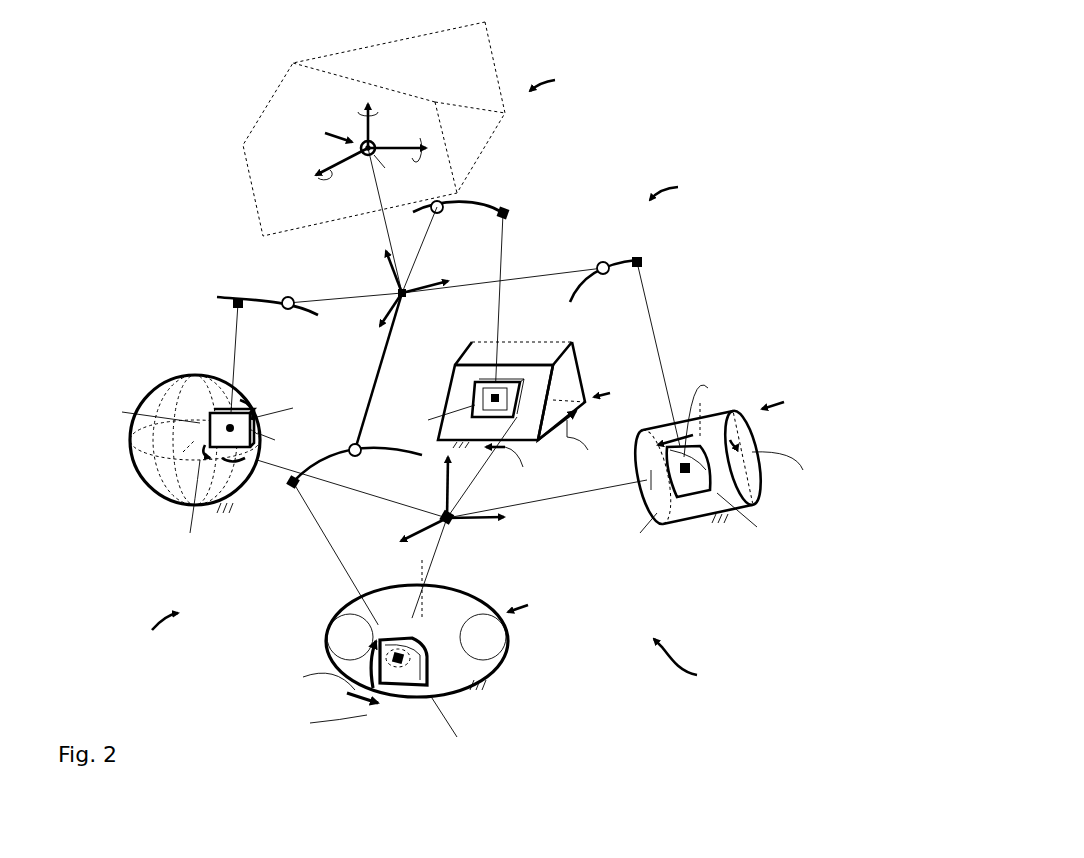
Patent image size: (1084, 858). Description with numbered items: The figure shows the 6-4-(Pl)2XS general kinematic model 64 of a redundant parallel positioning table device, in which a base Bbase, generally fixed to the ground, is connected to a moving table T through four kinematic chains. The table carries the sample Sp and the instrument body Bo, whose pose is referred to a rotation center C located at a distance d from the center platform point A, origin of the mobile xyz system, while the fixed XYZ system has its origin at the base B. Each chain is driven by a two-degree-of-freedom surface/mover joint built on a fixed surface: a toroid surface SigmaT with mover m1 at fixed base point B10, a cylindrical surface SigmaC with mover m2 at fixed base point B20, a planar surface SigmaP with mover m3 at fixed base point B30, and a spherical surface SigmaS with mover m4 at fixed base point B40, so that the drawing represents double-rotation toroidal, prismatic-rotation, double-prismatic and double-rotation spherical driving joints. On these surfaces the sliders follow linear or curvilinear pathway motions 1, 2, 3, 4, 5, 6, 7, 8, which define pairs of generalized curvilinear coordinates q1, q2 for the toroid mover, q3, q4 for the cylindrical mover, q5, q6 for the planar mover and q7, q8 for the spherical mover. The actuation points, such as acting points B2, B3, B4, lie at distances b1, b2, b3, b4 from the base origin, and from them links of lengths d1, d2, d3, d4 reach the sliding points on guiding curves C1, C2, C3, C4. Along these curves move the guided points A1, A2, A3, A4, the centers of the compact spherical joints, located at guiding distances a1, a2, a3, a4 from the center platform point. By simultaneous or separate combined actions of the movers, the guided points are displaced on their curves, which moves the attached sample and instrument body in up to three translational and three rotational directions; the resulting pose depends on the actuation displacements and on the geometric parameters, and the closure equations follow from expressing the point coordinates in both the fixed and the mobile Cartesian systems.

The slider pathway motion 1 is at (396, 692).
The slider pathway motion 2 is at (433, 673).
The slider pathway motion 3 is at (693, 507).
The slider pathway motion 4 is at (643, 490).
The slider pathway motion 5 is at (502, 380).
The slider pathway motion 6 is at (530, 383).
The slider pathway motion 7 is at (252, 405).
The slider pathway motion 8 is at (240, 467).
The sample Sp is at (374, 129).
The rotation center C is at (379, 143).
The body Bo is at (555, 79).
The table T is at (674, 187).
The distance d is at (381, 243).
The center platform point A is at (406, 308).
The guided point A1 is at (358, 457).
The guided point A2 is at (603, 272).
The guided point A3 is at (458, 199).
The guided point A4 is at (285, 298).
The guiding curve C1 is at (412, 446).
The guiding curve C2 is at (639, 257).
The guiding curve C3 is at (509, 214).
The guiding curve C4 is at (211, 288).
The guiding point distance a1 is at (378, 371).
The guiding point distance a2 is at (470, 290).
The guiding point distance a3 is at (419, 250).
The guiding point distance a4 is at (340, 301).
The distance d1 is at (323, 540).
The distance d2 is at (651, 322).
The distance d3 is at (498, 262).
The distance d4 is at (236, 350).
The actuation point distance b1 is at (441, 560).
The actuation point distance b2 is at (568, 490).
The actuation point distance b3 is at (495, 475).
The actuation point distance b4 is at (360, 497).
The base B is at (451, 507).
The fixed base point B10 is at (418, 737).
The fixed base point B20 is at (705, 466).
The fixed base point B30 is at (506, 411).
The fixed base point B40 is at (202, 442).
The actuation point B2 is at (642, 538).
The actuation point B3 is at (440, 418).
The actuation point B4 is at (285, 414).
The surface mover m1 is at (451, 727).
The surface mover m2 is at (748, 520).
The surface mover m3 is at (493, 382).
The surface mover m4 is at (284, 444).
The generalized actuated coordinate q1 is at (328, 718).
The generalized actuated coordinate q2 is at (324, 686).
The generalized actuated coordinate q3 is at (779, 473).
The generalized actuated coordinate q4 is at (702, 421).
The generalized actuated coordinate q5 is at (508, 472).
The generalized actuated coordinate q6 is at (587, 437).
The generalized actuated coordinate q7 is at (203, 505).
The generalized actuated coordinate q8 is at (152, 414).
The toroid surface SigmaT is at (533, 609).
The cylindrical surface SigmaC is at (783, 397).
The planar surface SigmaP is at (615, 393).
The spherical surface SigmaS is at (108, 506).
The base Bbase is at (163, 634).
The 6-4-(Pl)2XS general kinematic model 64 is at (713, 673).